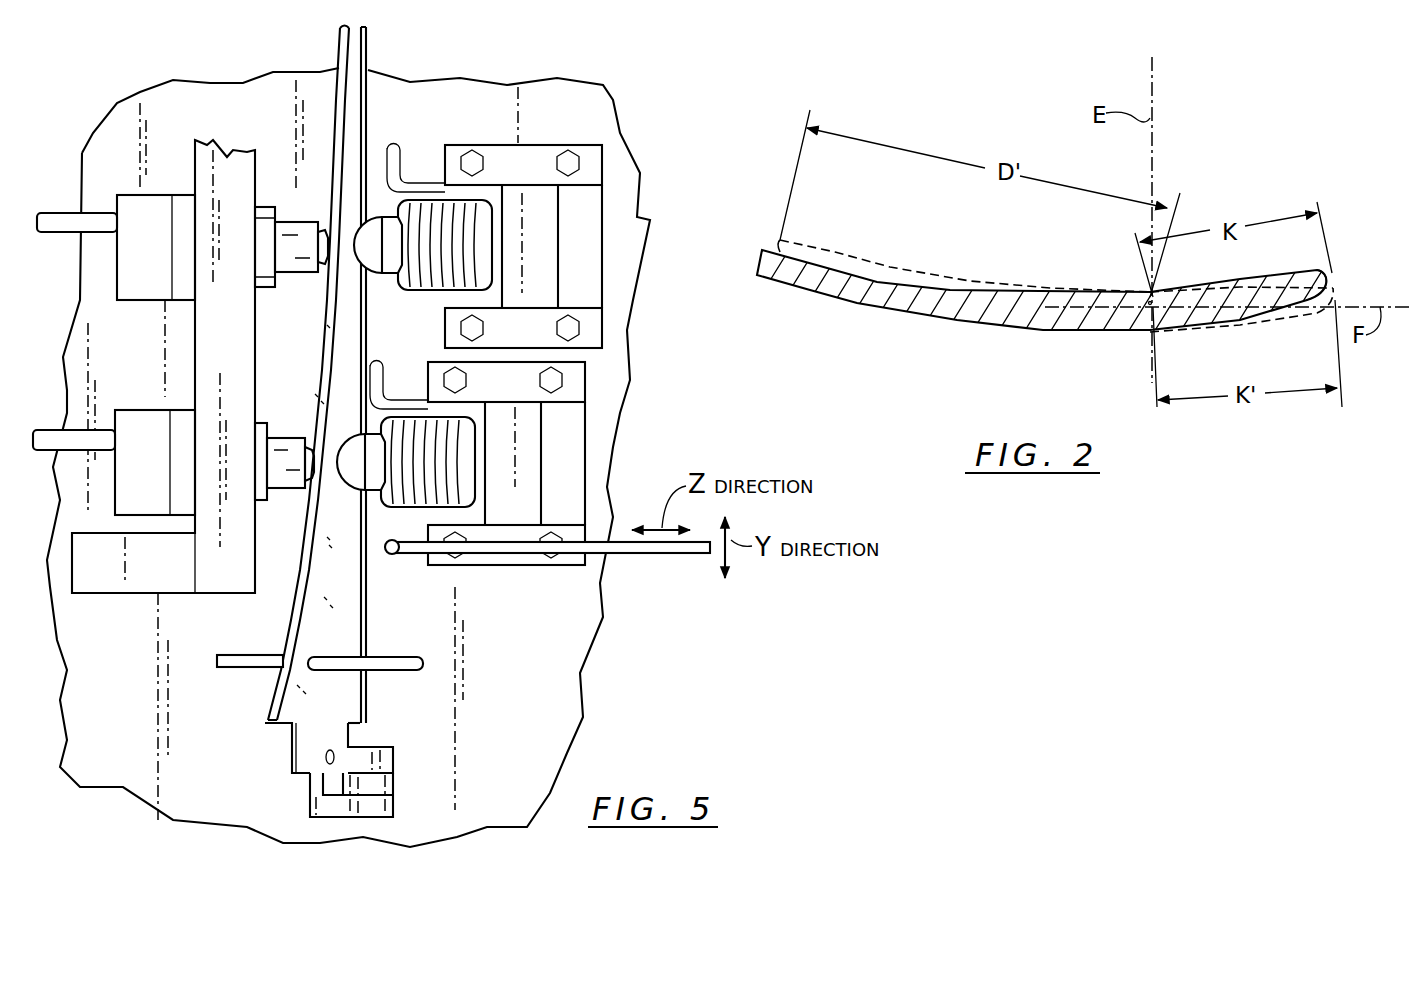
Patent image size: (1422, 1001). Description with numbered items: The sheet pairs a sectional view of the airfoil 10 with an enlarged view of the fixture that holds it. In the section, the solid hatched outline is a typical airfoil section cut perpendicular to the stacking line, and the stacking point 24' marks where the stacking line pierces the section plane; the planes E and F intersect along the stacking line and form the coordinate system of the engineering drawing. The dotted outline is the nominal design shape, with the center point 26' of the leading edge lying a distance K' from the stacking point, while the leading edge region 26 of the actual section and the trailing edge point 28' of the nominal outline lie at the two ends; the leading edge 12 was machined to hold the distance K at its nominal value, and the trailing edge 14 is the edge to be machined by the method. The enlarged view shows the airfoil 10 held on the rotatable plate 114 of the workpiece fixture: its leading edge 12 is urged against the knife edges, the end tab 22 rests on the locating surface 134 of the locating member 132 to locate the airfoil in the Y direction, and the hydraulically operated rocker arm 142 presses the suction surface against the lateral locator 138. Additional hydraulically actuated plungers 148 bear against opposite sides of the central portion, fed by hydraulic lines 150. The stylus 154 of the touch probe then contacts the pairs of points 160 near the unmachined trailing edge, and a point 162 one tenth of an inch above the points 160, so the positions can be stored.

In FIG. 5, the airfoil 10 is at (375, 52).
In FIG. 5, the leading edge 12 is at (368, 113).
In FIG. 5, the trailing edge 14 is at (339, 50).
In FIG. 2, the trailing edge 14 is at (762, 262).
In FIG. 5, the blade mounting plate 22 is at (297, 748).
In FIG. 2, the stacking point 24' is at (1109, 345).
In FIG. 2, the blade end 26 is at (1352, 265).
In FIG. 2, the leading edge center point 26' is at (1281, 300).
In FIG. 2, the deflected blade position 28' is at (931, 242).
In FIG. 5, the rotatable plate 114 is at (532, 647).
In FIG. 5, the locating member 132 is at (382, 782).
In FIG. 5, the locating surface 134 is at (358, 765).
In FIG. 5, the lateral locator 138 is at (383, 657).
In FIG. 5, the rocker arm 142 is at (258, 655).
In FIG. 5, the hydraulically actuated plungers 148 is at (293, 275).
In FIG. 5, the hydraulic lines 150 is at (38, 212).
In FIG. 5, the stylus 154 is at (478, 549).
In FIG. 5, the probe points 160 is at (311, 560).
In FIG. 5, the probe point 162 is at (314, 536).